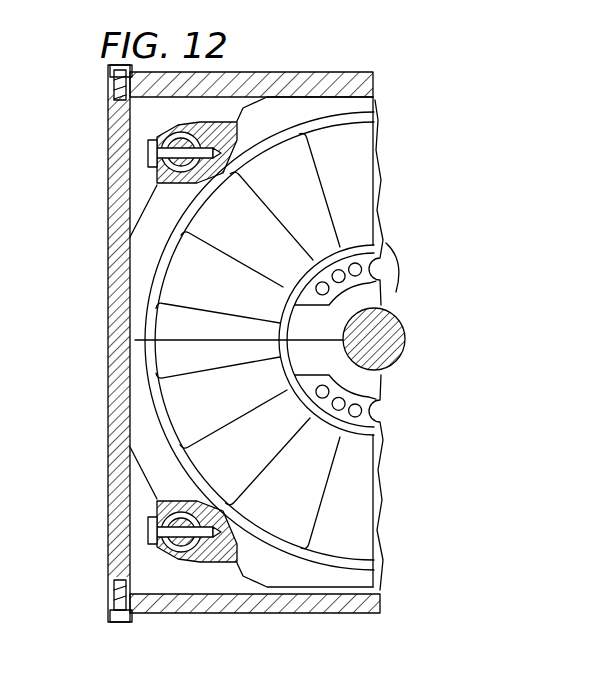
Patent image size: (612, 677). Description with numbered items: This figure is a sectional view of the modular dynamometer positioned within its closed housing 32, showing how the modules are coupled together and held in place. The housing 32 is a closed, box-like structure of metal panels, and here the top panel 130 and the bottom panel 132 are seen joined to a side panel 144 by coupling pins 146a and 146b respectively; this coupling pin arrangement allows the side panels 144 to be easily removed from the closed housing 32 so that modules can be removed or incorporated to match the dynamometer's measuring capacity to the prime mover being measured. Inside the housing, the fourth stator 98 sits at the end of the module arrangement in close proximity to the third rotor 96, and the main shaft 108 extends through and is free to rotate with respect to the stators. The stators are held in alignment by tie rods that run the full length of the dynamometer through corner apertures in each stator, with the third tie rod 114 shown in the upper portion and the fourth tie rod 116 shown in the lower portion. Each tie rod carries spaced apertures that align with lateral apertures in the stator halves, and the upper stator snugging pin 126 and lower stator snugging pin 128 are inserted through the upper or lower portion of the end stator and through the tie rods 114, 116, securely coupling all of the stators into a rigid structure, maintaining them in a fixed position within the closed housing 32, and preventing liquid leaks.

The closed housing 32 is at (94, 314).
The third rotor 96 is at (388, 251).
The fourth stator 98 is at (333, 107).
The main shaft 108 is at (352, 366).
The third tie rod 114 is at (199, 140).
The fourth tie rod 116 is at (173, 562).
The upper stator snugging pin 126 is at (157, 158).
The lower stator snugging pin 128 is at (148, 530).
The top panel 130 is at (275, 58).
The bottom panel 132 is at (143, 613).
The side panel 144 is at (108, 197).
The coupling pin 146a is at (109, 67).
The coupling pin 146b is at (108, 614).